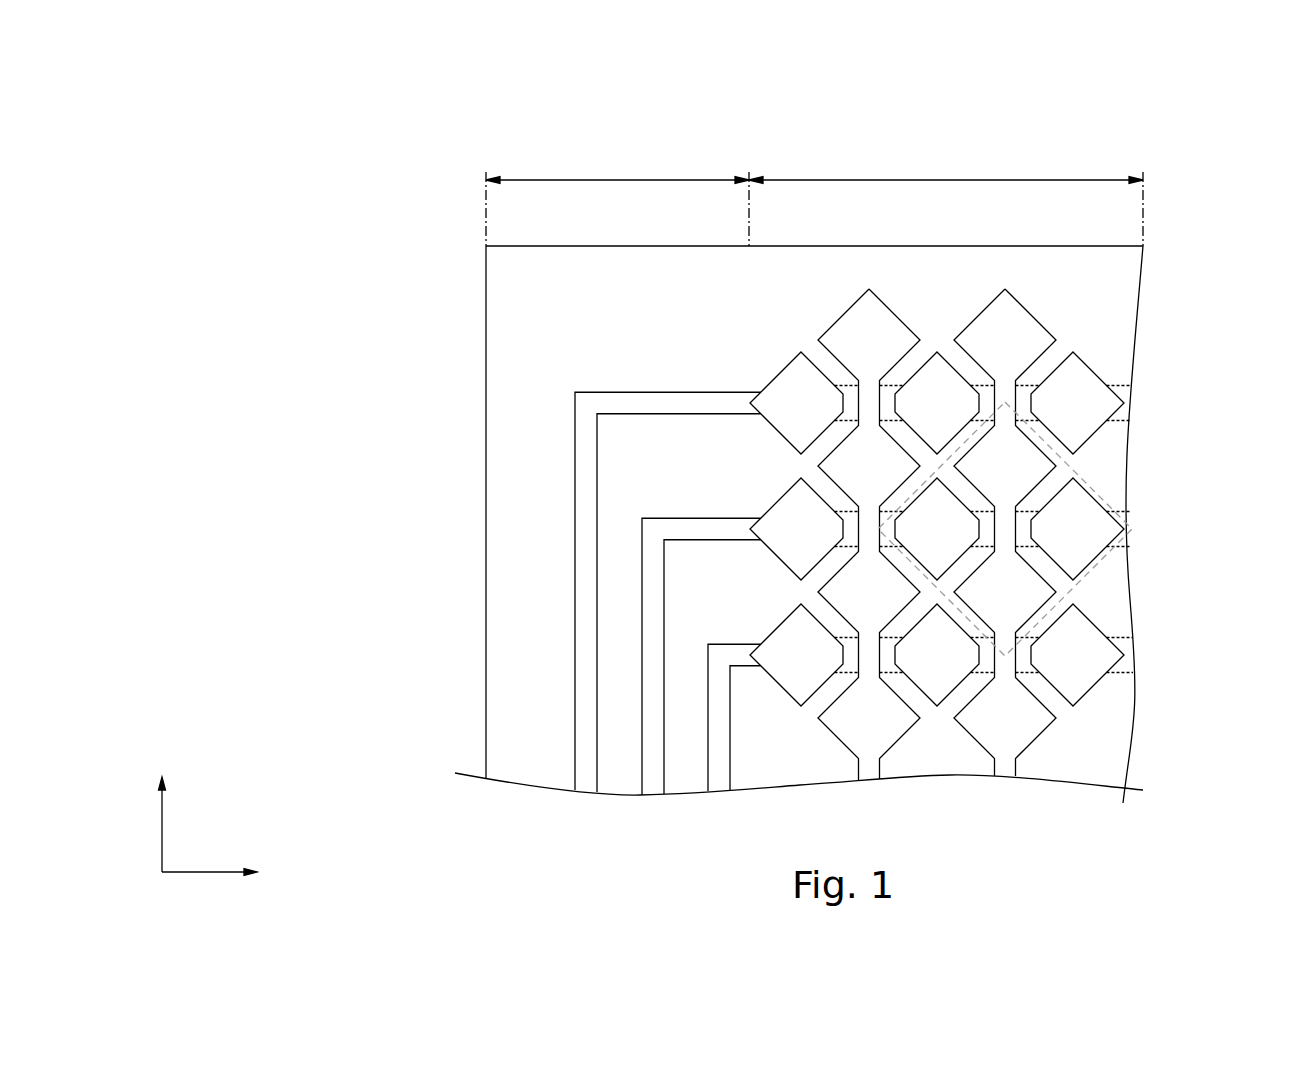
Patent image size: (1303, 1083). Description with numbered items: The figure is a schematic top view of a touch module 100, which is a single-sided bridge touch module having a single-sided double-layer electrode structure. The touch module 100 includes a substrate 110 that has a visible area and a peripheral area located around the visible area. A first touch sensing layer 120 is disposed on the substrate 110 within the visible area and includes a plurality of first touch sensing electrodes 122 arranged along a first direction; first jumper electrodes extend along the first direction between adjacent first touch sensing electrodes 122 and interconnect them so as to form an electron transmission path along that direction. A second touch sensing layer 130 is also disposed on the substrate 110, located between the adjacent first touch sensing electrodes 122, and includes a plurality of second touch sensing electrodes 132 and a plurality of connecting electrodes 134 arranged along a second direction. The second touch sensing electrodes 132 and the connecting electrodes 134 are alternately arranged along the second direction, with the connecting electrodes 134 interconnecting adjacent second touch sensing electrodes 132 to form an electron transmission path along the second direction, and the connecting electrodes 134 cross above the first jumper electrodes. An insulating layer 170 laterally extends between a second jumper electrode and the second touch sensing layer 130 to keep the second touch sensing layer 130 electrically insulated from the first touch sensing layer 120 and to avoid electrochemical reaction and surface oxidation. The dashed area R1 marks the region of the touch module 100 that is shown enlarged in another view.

The touch module 100 is at (206, 60).
The substrate 110 is at (1133, 306).
The first touch sensing layer 120 is at (1149, 529).
The first touch sensing electrode 122 is at (1107, 531).
The second touch sensing layer 130 is at (1009, 534).
The second touch sensing electrode 132 is at (1036, 469).
The connecting electrode 134 is at (1010, 525).
The insulating layer 170 is at (1053, 575).
The area R1 is at (1075, 598).